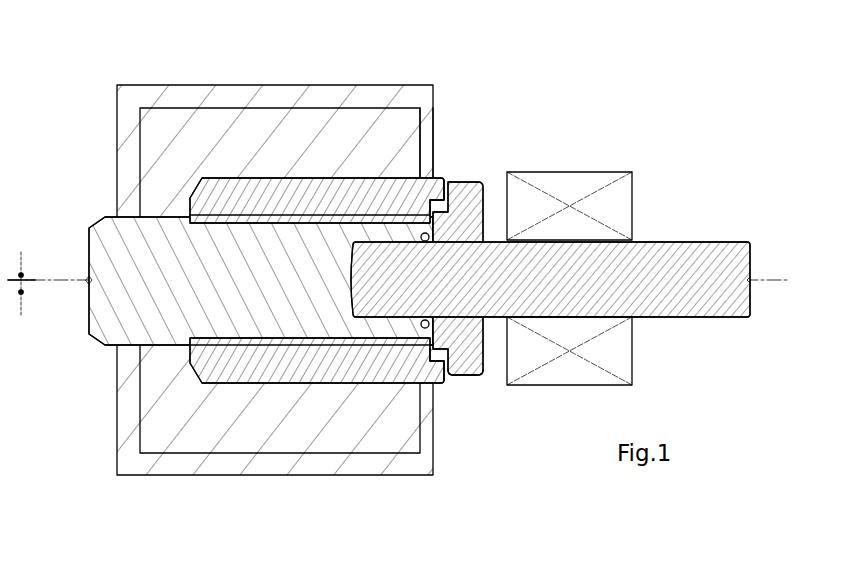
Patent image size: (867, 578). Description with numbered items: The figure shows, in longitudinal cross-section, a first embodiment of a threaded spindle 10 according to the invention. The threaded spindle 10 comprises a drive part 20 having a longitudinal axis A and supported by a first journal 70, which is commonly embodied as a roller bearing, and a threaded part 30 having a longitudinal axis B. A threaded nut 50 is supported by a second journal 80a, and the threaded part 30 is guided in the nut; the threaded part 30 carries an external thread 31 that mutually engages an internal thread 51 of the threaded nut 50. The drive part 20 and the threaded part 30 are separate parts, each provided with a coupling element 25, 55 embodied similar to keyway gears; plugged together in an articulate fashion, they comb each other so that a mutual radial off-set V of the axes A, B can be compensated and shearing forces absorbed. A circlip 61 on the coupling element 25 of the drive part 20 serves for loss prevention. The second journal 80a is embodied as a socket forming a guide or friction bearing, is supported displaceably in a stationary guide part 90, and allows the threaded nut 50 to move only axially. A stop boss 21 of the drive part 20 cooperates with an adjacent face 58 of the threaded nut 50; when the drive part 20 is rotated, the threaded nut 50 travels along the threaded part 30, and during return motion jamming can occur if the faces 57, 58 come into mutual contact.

The threaded spindle 10 is at (678, 203).
The drive part 20 is at (712, 318).
The stop boss 21 is at (482, 377).
The coupling element 25 is at (317, 424).
The threaded part 30 is at (107, 343).
The thread 31 is at (120, 352).
The threaded nut 50 is at (254, 344).
The thread 51 is at (428, 165).
The coupling element 55 is at (323, 390).
The face 57 is at (447, 183).
The adjacent face 58 is at (446, 365).
The circlip 61 is at (472, 183).
The first journal 70 is at (545, 180).
The second journal 80a is at (168, 142).
The guide part 90 is at (178, 88).
The radial off-set V is at (23, 270).
The longitudinal axis B is at (68, 290).
The longitudinal axis A is at (766, 274).